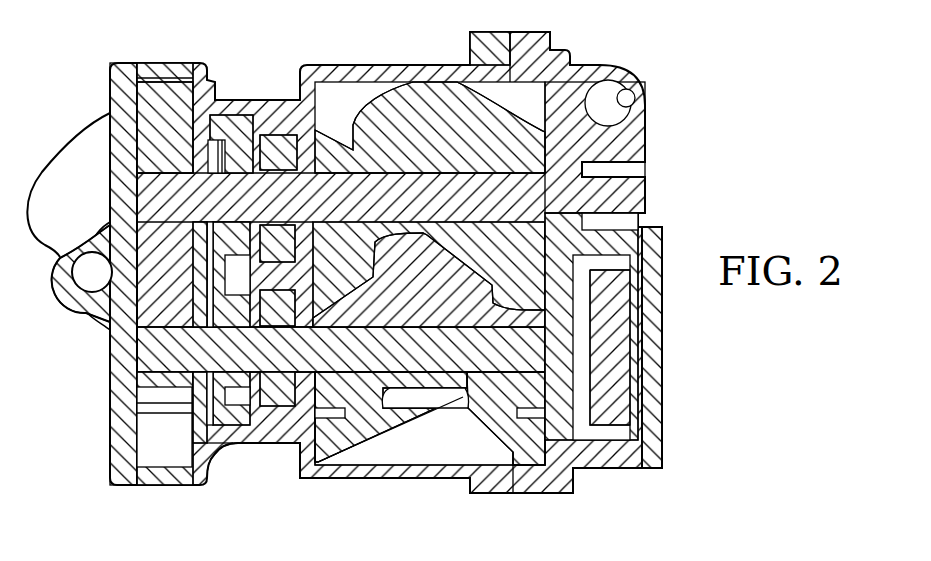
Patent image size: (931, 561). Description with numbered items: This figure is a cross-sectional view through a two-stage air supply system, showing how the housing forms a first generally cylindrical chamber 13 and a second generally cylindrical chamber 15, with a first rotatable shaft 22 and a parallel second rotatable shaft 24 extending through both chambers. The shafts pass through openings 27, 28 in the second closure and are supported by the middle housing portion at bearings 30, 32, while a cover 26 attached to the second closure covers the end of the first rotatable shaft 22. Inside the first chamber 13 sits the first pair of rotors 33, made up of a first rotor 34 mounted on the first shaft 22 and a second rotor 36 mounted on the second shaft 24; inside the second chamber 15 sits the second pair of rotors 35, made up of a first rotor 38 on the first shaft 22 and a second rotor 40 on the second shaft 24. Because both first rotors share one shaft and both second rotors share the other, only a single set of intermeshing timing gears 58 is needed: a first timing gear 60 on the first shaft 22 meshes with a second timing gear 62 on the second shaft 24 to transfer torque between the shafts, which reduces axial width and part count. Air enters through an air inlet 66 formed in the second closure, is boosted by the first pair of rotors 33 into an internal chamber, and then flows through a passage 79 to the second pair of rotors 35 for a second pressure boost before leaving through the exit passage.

The first generally cylindrical chamber 13 is at (342, 112).
The second generally cylindrical chamber 15 is at (235, 122).
The first rotatable shaft 22 is at (620, 350).
The second rotatable shaft 24 is at (622, 196).
The cover 26 is at (663, 347).
The opening 27 is at (566, 188).
The opening 28 is at (565, 337).
The bearing 30 is at (280, 152).
The bearing 32 is at (281, 388).
The first pair of rotors 33 is at (413, 435).
The first rotor 34 is at (352, 418).
The second pair of rotors 35 is at (166, 106).
The second rotor 36 is at (438, 130).
The first rotor 38 is at (165, 278).
The second rotor 40 is at (180, 92).
The timing gears 58 is at (238, 452).
The first timing gear 60 is at (240, 412).
The second timing gear 62 is at (218, 166).
The air inlet 66 is at (618, 100).
The passage 79 is at (59, 283).